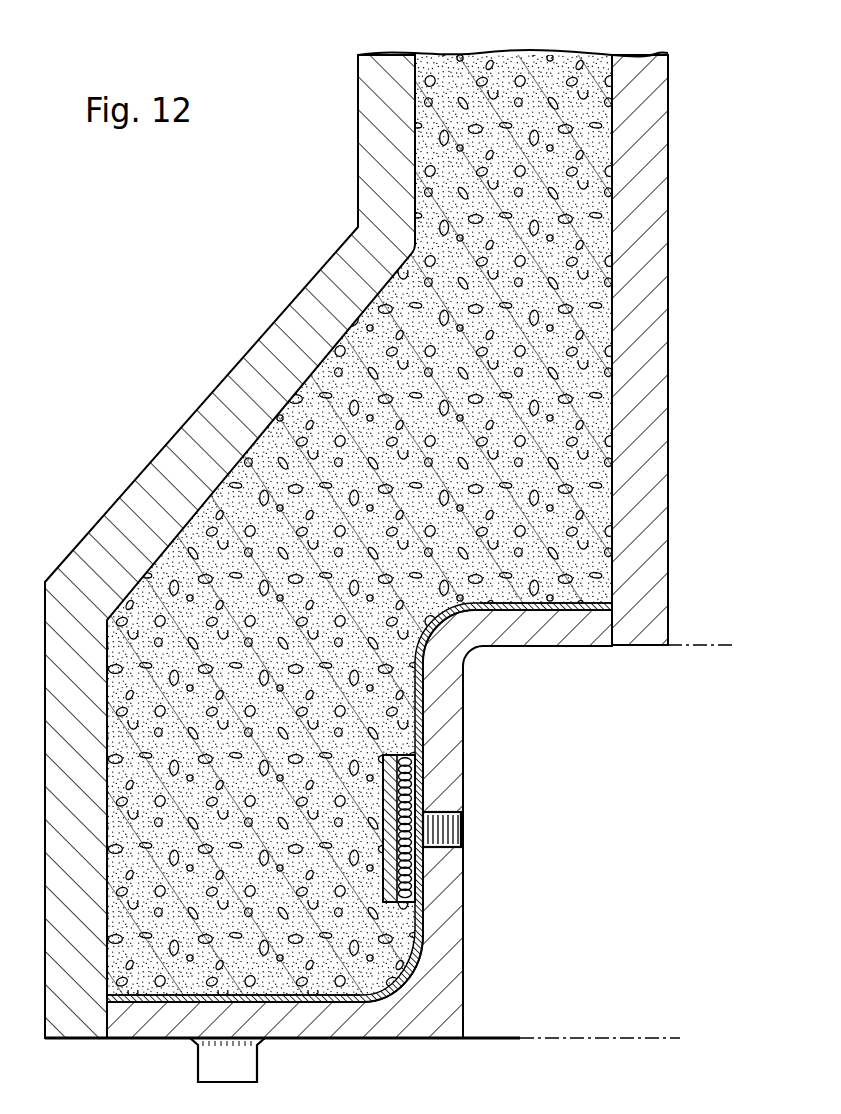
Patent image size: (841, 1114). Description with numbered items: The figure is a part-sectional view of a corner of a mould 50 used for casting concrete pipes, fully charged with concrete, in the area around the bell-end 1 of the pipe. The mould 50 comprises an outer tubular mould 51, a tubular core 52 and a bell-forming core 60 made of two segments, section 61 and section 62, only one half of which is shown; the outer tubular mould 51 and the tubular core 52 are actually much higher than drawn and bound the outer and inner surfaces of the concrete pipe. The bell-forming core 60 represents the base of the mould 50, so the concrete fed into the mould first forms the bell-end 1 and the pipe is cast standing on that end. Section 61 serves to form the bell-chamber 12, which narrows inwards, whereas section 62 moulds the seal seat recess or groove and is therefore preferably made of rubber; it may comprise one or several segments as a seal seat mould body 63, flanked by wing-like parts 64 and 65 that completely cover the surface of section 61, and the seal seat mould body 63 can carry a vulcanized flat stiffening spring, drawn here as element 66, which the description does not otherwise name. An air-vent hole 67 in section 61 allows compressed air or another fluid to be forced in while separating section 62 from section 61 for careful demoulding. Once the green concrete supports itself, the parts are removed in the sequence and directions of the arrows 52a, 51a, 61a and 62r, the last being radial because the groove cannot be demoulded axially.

The bell-end 1 is at (510, 92).
The bell-chamber 12 is at (567, 972).
The mould 50 is at (382, 544).
The outer tubular mould 51 is at (187, 442).
The demoulding direction of outer tubular mould 51a is at (343, 57).
The tubular core 52 is at (653, 547).
The demoulding direction of tubular core 52a is at (637, 9).
The bell-forming core 60 is at (359, 824).
The section of bell-forming core 61 is at (450, 670).
The demoulding direction of section 61 61a is at (435, 1010).
The section of bell-forming core 62 is at (359, 773).
The radial demoulding direction of section 62 62r is at (525, 827).
The seal seat mould body 63 is at (382, 782).
The wing-like part 64 is at (212, 993).
The wing-like part 65 is at (538, 602).
The spring element 66 is at (383, 837).
The air-vent hole 67 is at (452, 822).